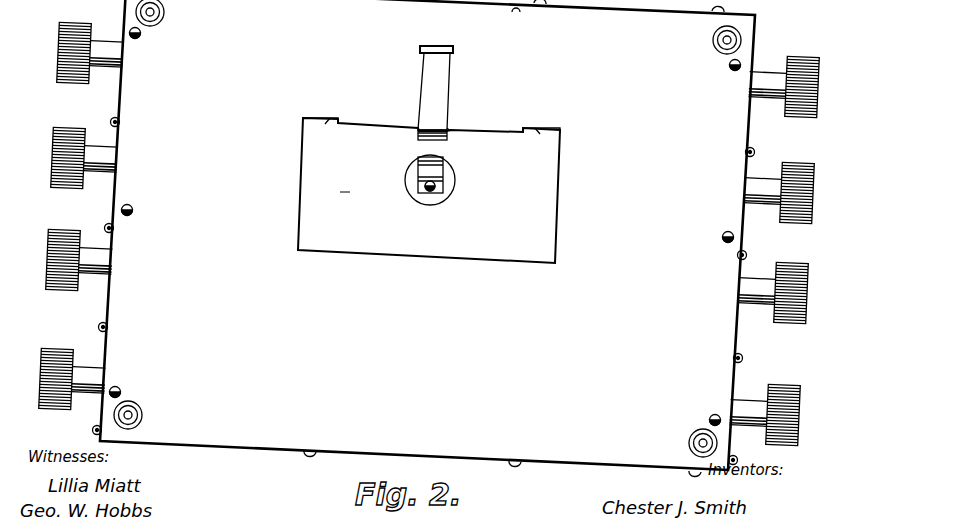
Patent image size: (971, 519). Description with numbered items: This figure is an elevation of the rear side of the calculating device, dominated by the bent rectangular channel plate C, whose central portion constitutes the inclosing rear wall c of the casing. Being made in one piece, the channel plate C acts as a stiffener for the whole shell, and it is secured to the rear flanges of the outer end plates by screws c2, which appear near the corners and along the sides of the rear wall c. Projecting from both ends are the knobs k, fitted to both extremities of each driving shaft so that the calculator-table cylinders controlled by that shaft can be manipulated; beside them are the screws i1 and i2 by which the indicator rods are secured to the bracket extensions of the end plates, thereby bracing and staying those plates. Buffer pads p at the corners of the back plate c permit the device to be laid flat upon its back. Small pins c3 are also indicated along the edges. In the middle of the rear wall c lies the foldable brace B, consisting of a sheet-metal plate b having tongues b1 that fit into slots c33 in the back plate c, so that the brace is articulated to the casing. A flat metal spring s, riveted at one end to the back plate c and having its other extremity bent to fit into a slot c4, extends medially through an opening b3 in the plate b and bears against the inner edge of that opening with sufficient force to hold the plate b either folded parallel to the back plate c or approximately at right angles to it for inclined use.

The rectangular channel plate C is at (427, 235).
The rear wall c is at (514, 180).
The screws c2 is at (141, 36).
The pins c3 is at (310, 455).
The slot c4 is at (457, 45).
The slots c33 is at (327, 119).
The knobs k is at (425, 233).
The buffer pads p is at (688, 441).
The screws i1 is at (110, 121).
The contact screws i2 is at (104, 226).
The foldable brace B is at (429, 190).
The plate b is at (351, 193).
The tongues b1 is at (320, 122).
The opening b3 is at (458, 127).
The flat metal spring s is at (430, 125).